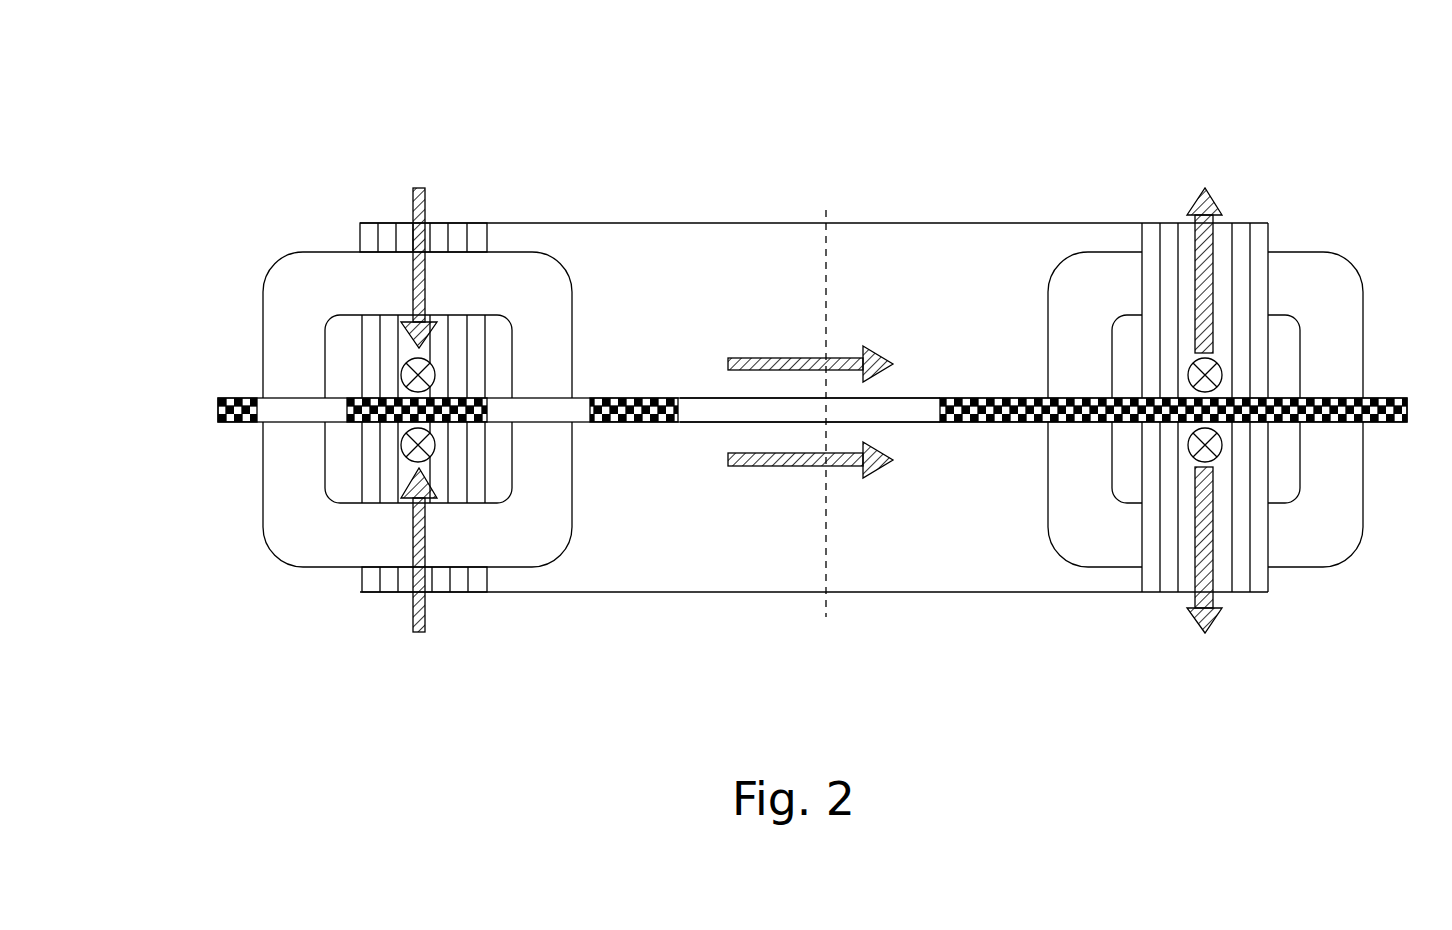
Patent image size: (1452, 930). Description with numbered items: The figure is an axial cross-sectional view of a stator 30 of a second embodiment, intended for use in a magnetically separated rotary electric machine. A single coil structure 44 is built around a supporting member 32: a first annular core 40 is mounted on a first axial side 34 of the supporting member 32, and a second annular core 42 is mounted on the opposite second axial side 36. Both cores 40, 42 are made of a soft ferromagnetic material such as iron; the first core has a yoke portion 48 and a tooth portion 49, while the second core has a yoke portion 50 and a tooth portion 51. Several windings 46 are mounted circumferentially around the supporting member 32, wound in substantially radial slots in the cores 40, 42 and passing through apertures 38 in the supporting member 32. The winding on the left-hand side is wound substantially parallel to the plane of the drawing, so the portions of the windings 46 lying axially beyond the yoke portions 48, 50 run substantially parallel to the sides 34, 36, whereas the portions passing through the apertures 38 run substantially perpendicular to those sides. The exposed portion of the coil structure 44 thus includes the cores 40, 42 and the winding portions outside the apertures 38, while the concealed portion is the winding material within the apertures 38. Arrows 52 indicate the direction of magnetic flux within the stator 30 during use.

The stator 30 is at (1032, 128).
The supporting member 32 is at (1385, 398).
The first axial side 34 is at (978, 400).
The second axial side 36 is at (985, 422).
The apertures 38 is at (257, 398).
The first annular core 40 is at (679, 305).
The second annular core 42 is at (684, 552).
The coil structure 44 is at (884, 608).
The windings 46 is at (341, 553).
The yoke portion 48 is at (462, 338).
The tooth portion 49 is at (452, 227).
The yoke portion 50 is at (467, 462).
The tooth portion 51 is at (1247, 577).
The arrows 52 is at (413, 203).